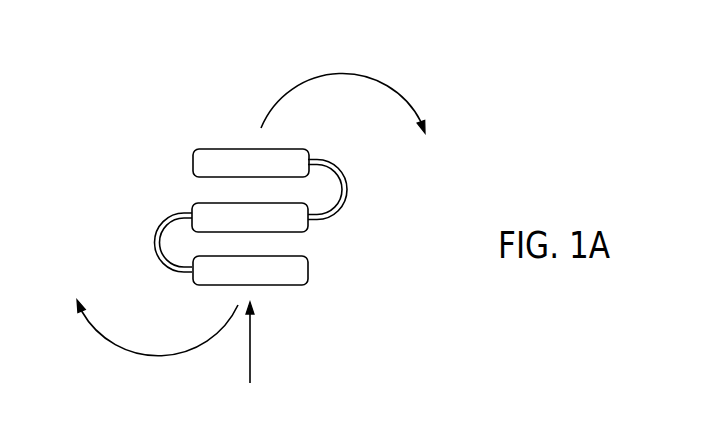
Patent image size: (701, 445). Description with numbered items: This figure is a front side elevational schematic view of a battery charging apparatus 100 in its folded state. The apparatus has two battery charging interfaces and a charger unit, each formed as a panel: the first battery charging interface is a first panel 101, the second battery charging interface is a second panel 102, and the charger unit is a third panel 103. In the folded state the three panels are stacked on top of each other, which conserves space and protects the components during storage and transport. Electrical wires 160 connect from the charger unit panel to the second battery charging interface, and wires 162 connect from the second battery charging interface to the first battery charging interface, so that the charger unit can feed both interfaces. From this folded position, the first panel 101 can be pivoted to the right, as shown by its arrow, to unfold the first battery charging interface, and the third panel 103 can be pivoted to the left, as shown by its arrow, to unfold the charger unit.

The first panel 101 is at (199, 162).
The second panel 102 is at (208, 210).
The third panel 103 is at (300, 270).
The electrical wires 160 is at (156, 246).
The wires 162 is at (343, 178).
The battery charging apparatus 100 is at (255, 361).